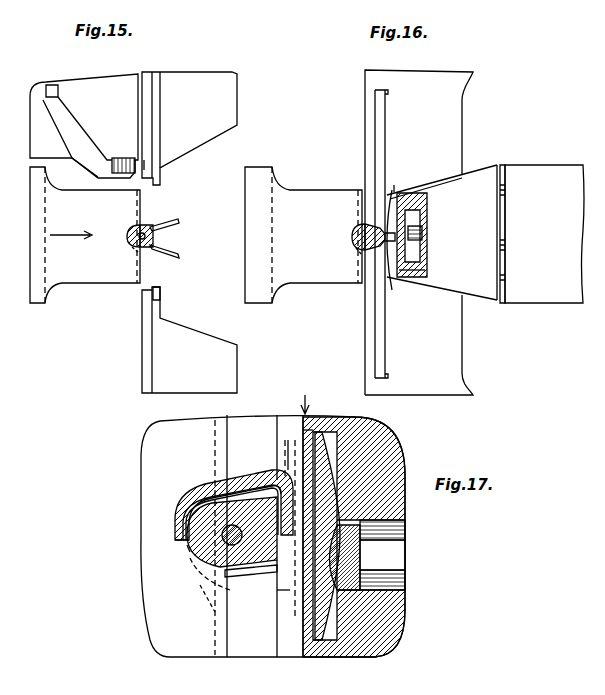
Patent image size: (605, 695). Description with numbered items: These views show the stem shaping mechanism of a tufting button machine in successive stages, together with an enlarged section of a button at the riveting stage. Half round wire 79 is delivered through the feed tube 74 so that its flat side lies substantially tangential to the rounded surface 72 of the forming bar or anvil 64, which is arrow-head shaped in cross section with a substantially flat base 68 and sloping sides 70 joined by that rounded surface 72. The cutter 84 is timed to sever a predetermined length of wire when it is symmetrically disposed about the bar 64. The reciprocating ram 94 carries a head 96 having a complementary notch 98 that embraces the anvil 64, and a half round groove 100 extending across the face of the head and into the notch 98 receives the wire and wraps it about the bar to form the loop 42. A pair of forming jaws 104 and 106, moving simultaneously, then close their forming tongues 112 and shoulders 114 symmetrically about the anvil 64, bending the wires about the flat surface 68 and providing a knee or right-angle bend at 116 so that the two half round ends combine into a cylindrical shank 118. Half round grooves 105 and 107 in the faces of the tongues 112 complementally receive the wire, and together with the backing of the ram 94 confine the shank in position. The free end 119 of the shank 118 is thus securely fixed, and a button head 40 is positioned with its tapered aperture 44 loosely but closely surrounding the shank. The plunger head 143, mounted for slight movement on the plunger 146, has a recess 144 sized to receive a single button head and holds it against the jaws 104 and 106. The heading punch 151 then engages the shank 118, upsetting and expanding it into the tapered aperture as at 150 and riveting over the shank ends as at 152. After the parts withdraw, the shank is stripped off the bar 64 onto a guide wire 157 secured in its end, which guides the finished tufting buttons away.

In FIG. 16, the button head 40 is at (426, 215).
In FIG. 17, the button head 40 is at (332, 470).
In FIG. 17, the loop 42 is at (200, 485).
In FIG. 17, the tapered aperture 44 is at (330, 530).
In FIG. 15, the forming bar or anvil 64 is at (155, 235).
In FIG. 16, the forming bar or anvil 64 is at (352, 237).
In FIG. 17, the forming bar or anvil 64 is at (190, 535).
In FIG. 17, the flat base 68 is at (286, 440).
In FIG. 17, the sloping sides 70 is at (243, 495).
In FIG. 17, the rounded surface 72 is at (176, 522).
In FIG. 15, the feed tube 74 is at (122, 158).
In FIG. 15, the half round wire 79 is at (172, 220).
In FIG. 15, the cutter 84 is at (90, 172).
In FIG. 15, the ram 94 is at (40, 262).
In FIG. 16, the ram 94 is at (254, 185).
In FIG. 15, the head 96 is at (113, 278).
In FIG. 16, the head 96 is at (308, 195).
In FIG. 17, the head 96 is at (152, 468).
In FIG. 15, the notch 98 is at (132, 227).
In FIG. 16, the notch 98 is at (360, 228).
In FIG. 17, the notch 98 is at (205, 545).
In FIG. 15, the half round groove 100 is at (140, 250).
In FIG. 16, the half round groove 100 is at (360, 250).
In FIG. 17, the half round groove 100 is at (213, 613).
In FIG. 15, the forming jaw 104 is at (238, 360).
In FIG. 16, the forming jaw 104 is at (463, 350).
In FIG. 17, the forming jaw 104 is at (299, 395).
In FIG. 17, the half round groove 105 is at (310, 440).
In FIG. 15, the forming jaw 106 is at (238, 98).
In FIG. 16, the forming jaw 106 is at (463, 105).
In FIG. 17, the forming jaw 106 is at (290, 645).
In FIG. 17, the half round groove 107 is at (276, 606).
In FIG. 15, the forming tongue 112 is at (160, 183).
In FIG. 17, the forming tongue 112 is at (290, 560).
In FIG. 15, the shoulder 114 is at (148, 170).
In FIG. 17, the shoulder 114 is at (268, 480).
In FIG. 17, the knee or right-angle bend 116 is at (332, 505).
In FIG. 16, the cylindrical shank 118 is at (392, 232).
In FIG. 16, the free end 119 is at (389, 278).
In FIG. 16, the plunger head 143 is at (478, 172).
In FIG. 17, the plunger head 143 is at (385, 596).
In FIG. 16, the recess 144 is at (424, 260).
In FIG. 17, the recess 144 is at (375, 651).
In FIG. 16, the plunger 146 is at (540, 178).
In FIG. 17, the expanded shank portion 150 is at (378, 526).
In FIG. 16, the heading punch 151 is at (423, 233).
In FIG. 17, the heading punch 151 is at (396, 545).
In FIG. 17, the riveted-over shank ends 152 is at (372, 545).
In FIG. 17, the guide wire 157 is at (212, 560).